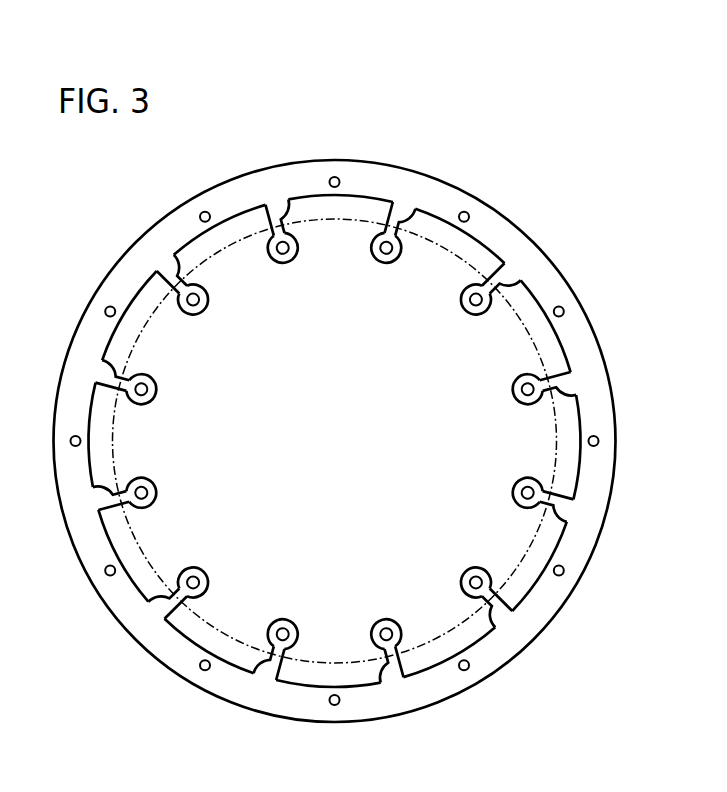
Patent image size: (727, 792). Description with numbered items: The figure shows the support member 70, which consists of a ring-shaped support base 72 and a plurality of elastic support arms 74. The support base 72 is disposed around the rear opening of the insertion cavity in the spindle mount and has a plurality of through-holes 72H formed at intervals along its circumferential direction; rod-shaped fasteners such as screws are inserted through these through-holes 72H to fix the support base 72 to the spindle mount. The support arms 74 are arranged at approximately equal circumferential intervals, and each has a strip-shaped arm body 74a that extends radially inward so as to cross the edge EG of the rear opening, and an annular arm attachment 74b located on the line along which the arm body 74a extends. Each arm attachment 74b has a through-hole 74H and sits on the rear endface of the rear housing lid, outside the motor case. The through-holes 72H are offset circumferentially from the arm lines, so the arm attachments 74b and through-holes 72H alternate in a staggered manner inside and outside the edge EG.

The support member 70 is at (599, 123).
The support base 72 is at (311, 162).
The through-hole 72H is at (335, 176).
The support arm 74 is at (465, 128).
The arm body 74a is at (291, 188).
The arm attachment 74b is at (384, 231).
The through-hole 74H is at (283, 255).
The edge EG is at (498, 262).